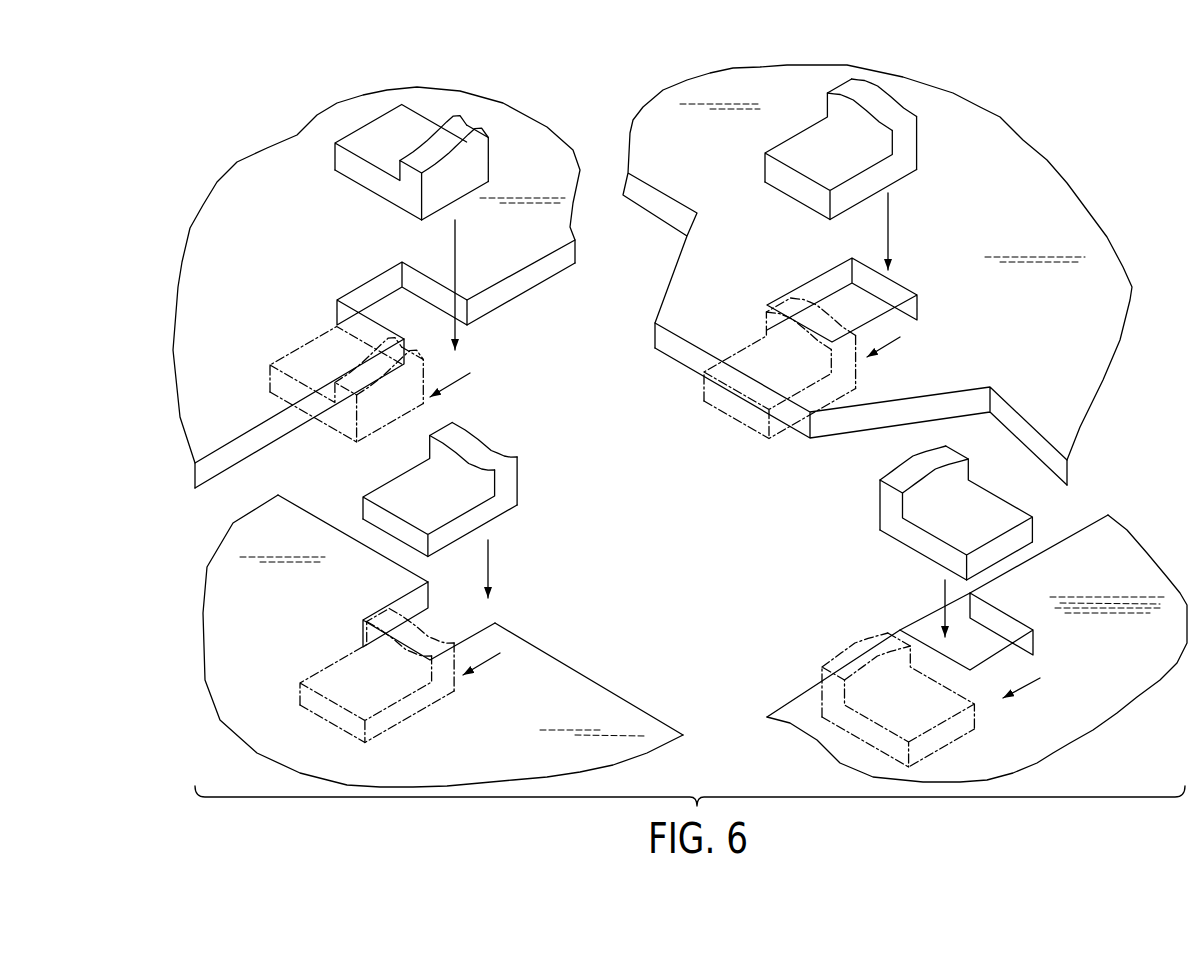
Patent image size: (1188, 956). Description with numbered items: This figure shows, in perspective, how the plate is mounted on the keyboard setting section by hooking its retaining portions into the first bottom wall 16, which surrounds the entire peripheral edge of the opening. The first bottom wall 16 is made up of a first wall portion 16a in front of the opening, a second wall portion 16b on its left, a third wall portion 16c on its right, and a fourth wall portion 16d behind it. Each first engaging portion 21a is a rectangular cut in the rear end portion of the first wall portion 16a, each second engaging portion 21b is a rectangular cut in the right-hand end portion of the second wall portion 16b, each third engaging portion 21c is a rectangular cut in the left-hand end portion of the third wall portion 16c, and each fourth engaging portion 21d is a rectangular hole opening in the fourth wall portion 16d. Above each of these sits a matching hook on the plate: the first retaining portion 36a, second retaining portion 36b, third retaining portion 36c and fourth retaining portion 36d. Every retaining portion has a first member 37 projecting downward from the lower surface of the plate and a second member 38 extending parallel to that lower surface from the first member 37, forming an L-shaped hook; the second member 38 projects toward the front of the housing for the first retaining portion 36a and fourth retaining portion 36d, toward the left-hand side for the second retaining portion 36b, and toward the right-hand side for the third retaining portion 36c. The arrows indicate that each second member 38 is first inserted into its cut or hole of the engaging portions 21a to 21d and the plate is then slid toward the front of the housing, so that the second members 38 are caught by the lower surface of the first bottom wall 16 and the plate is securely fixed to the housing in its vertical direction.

The first bottom wall 16 is at (1022, 158).
The first wall portion 16a is at (558, 710).
The second wall portion 16b is at (275, 200).
The third wall portion 16c is at (1105, 583).
The fourth wall portion 16d is at (1037, 325).
The first engaging portion 21a is at (473, 631).
The second engaging portion 21b is at (387, 326).
The third engaging portion 21c is at (923, 638).
The fourth engaging portion 21d is at (898, 285).
The first retaining portion 36a is at (506, 446).
The second retaining portion 36b is at (438, 117).
The third retaining portion 36c is at (1004, 492).
The fourth retaining portion 36d is at (886, 97).
The first member 37 is at (467, 130).
The second member 38 is at (373, 180).